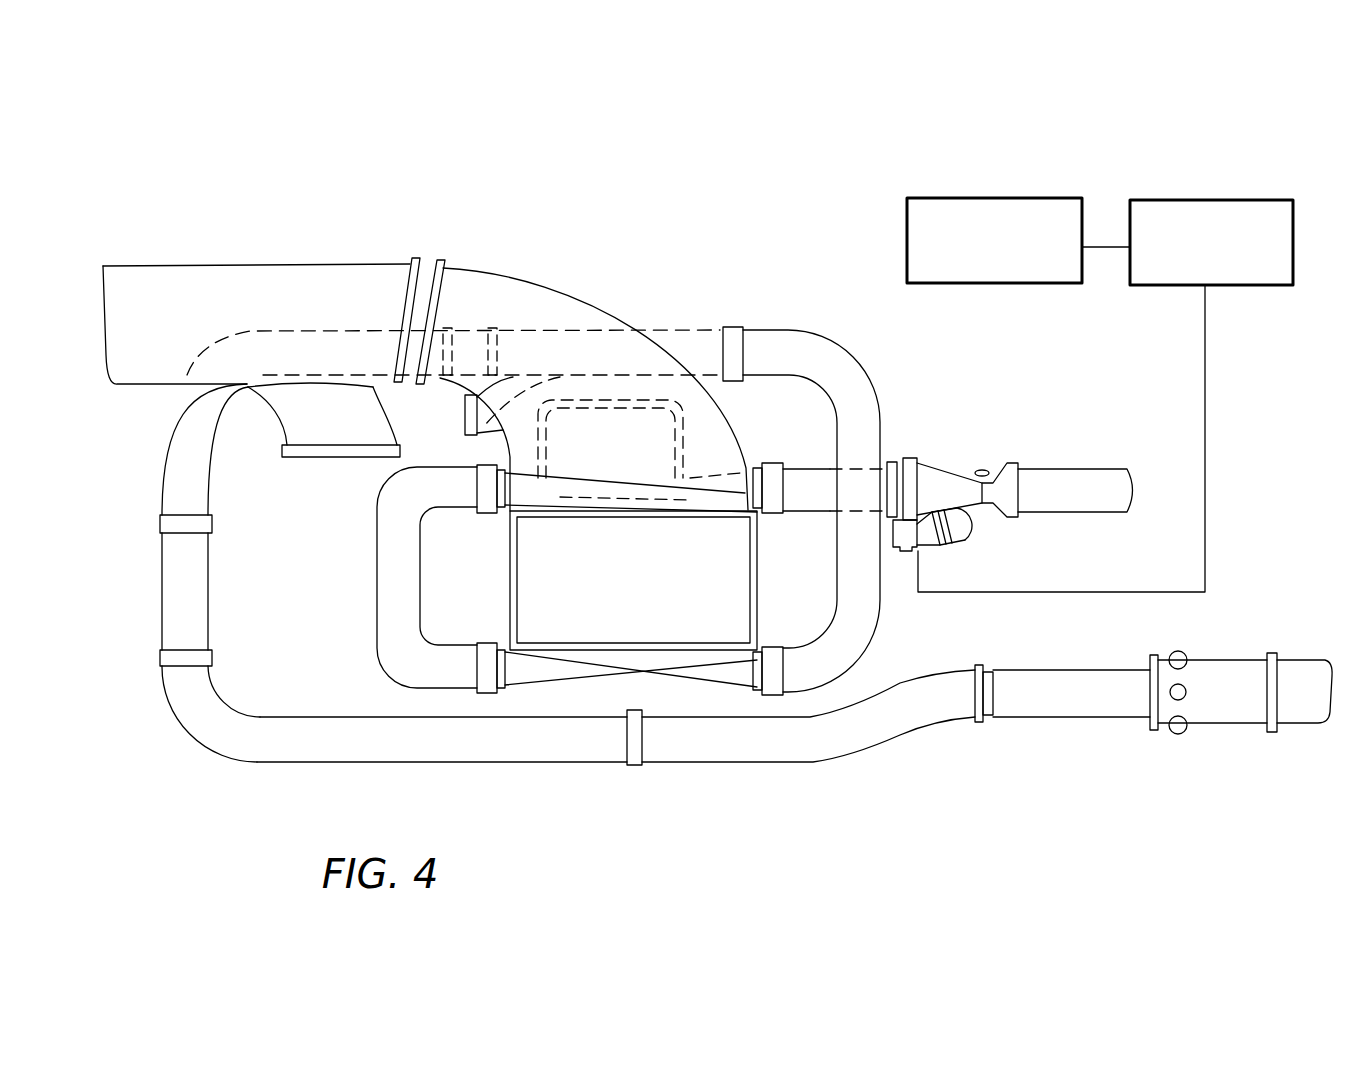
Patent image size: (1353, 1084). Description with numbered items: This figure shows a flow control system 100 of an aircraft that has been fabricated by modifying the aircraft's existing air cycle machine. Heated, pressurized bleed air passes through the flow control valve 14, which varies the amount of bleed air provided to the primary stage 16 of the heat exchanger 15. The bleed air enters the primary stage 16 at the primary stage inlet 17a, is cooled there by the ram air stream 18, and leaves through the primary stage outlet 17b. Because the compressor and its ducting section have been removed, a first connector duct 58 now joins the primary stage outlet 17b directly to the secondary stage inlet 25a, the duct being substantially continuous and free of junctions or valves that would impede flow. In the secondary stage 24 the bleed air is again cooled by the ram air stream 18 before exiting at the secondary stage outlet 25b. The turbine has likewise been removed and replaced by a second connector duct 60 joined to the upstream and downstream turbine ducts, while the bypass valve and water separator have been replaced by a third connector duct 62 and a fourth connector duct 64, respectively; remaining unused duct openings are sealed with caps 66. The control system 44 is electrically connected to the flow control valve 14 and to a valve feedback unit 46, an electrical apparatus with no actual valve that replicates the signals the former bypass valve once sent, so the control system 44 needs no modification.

The flow control system 100 is at (272, 185).
The flow control valve 14 is at (945, 543).
The heat exchanger 15 is at (633, 580).
The primary stage 16 is at (697, 480).
The primary stage inlet 17a is at (779, 466).
The primary stage outlet 17b is at (485, 515).
The ram air stream 18 is at (243, 265).
The secondary stage 24 is at (587, 683).
The secondary stage inlet 25a is at (490, 695).
The secondary stage outlet 25b is at (773, 697).
The control system 44 is at (1185, 198).
The valve feedback unit 46 is at (965, 198).
The first connector duct 58 is at (377, 625).
The second connector duct 60 is at (162, 575).
The third connector duct 62 is at (463, 328).
The fourth connector duct 64 is at (1053, 717).
The caps 66 is at (322, 460).